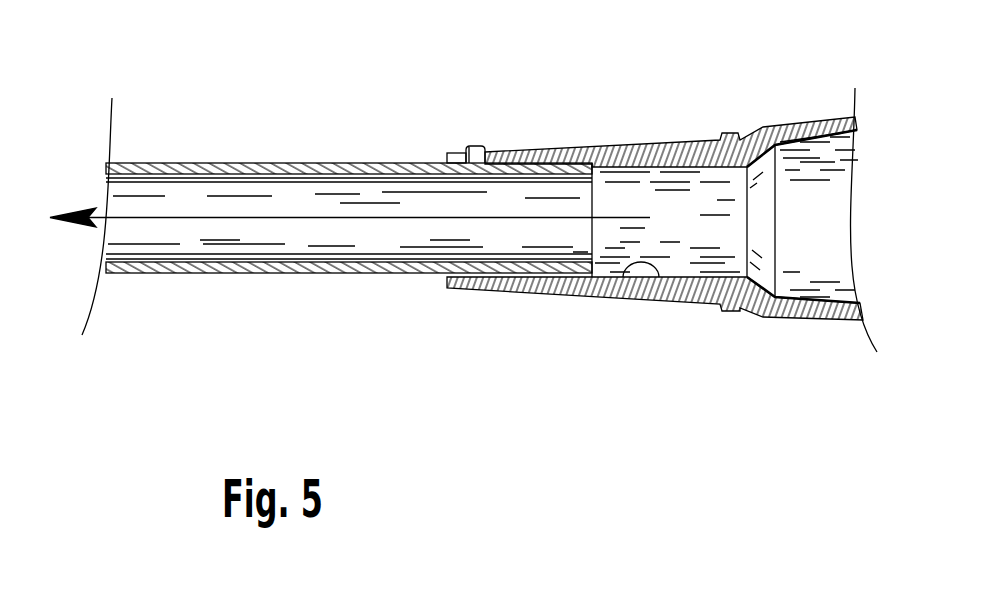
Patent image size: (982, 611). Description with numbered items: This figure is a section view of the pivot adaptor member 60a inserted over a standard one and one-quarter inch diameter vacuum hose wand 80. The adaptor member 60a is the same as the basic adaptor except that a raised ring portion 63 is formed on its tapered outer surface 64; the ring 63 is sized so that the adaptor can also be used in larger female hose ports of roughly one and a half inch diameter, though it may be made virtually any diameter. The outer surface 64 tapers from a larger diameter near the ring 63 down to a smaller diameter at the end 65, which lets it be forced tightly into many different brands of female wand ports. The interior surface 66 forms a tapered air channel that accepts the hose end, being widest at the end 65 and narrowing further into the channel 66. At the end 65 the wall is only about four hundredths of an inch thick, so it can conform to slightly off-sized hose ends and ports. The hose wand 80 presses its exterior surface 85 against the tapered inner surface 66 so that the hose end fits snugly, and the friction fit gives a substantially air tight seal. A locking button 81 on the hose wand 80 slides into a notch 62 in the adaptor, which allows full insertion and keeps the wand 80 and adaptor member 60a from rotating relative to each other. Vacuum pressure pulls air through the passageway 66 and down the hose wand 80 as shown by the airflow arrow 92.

The hose wand 80 is at (239, 105).
The exterior surface 85 is at (385, 163).
The notch 62 is at (455, 154).
The locking button 81 is at (480, 150).
The raised ring portion 63 is at (733, 133).
The end 65 is at (445, 285).
The tapered outer surface 64 is at (577, 290).
The interior surface 66 is at (660, 273).
The airflow arrow 92 is at (135, 218).
The adaptor member 60a is at (747, 380).